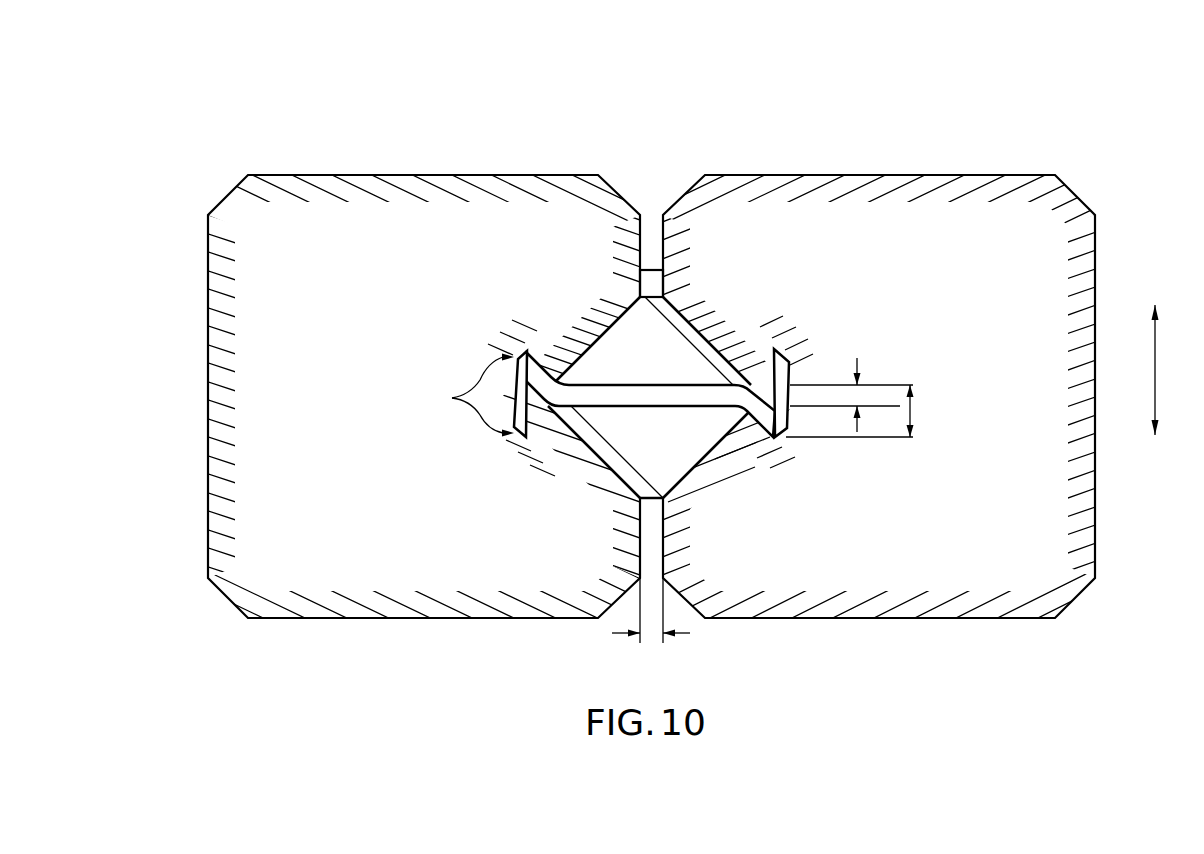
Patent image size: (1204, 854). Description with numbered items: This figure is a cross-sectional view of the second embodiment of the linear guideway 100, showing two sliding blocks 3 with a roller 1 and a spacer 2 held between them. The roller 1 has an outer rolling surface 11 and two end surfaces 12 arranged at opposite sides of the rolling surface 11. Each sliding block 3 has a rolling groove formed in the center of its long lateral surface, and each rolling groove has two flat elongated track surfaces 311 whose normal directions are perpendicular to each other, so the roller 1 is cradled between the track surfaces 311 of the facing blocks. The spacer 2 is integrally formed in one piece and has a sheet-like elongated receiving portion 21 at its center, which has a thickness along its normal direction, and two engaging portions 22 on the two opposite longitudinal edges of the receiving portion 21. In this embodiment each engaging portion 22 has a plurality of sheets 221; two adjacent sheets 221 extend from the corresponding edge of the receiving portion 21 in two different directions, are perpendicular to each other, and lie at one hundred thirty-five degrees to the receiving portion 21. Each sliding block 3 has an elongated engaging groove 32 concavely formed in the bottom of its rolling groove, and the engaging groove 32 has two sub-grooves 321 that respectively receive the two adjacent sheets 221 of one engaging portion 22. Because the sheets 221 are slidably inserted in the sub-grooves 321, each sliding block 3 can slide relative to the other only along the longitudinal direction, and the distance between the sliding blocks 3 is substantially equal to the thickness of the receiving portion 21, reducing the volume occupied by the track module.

The linear guideway 100 is at (240, 110).
The sliding block 3 is at (458, 188).
The roller 1 is at (504, 294).
The rolling surface 11 is at (573, 327).
The end surface 12 is at (687, 313).
The spacer 2 is at (616, 448).
The receiving portion 21 is at (622, 395).
The engaging portion 22 is at (583, 547).
The sheet 221 is at (535, 355).
The engaging groove 32 is at (390, 388).
The sub-groove 321 is at (455, 386).
The track surface 311 is at (702, 336).